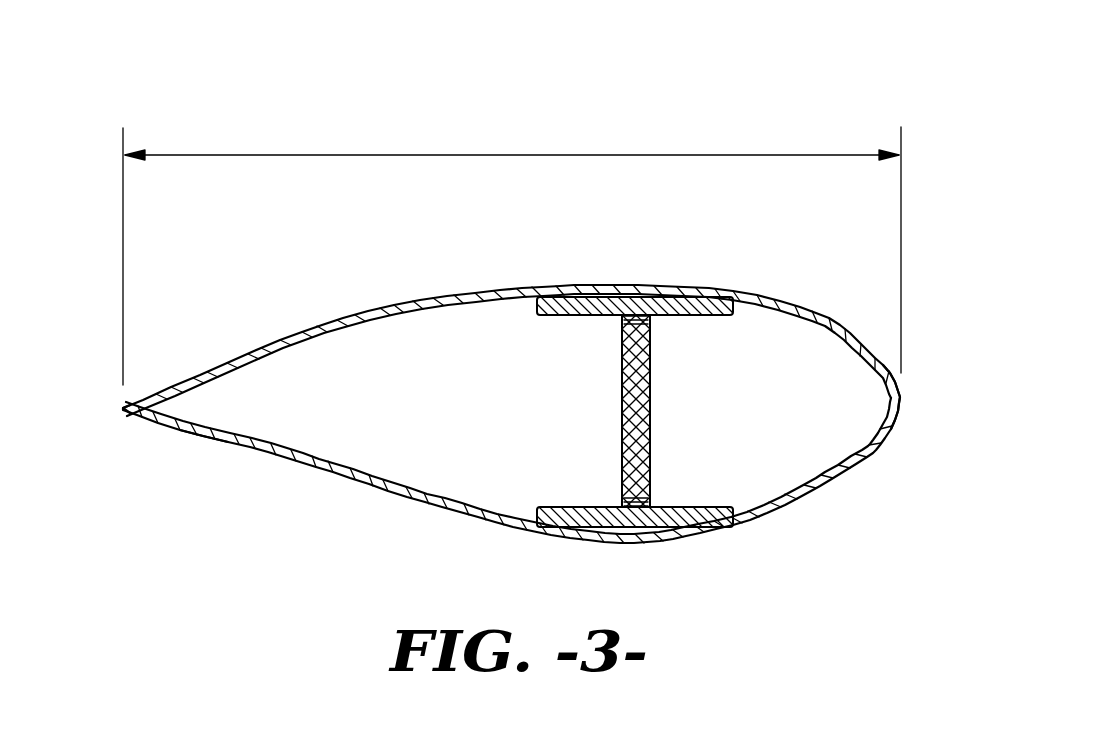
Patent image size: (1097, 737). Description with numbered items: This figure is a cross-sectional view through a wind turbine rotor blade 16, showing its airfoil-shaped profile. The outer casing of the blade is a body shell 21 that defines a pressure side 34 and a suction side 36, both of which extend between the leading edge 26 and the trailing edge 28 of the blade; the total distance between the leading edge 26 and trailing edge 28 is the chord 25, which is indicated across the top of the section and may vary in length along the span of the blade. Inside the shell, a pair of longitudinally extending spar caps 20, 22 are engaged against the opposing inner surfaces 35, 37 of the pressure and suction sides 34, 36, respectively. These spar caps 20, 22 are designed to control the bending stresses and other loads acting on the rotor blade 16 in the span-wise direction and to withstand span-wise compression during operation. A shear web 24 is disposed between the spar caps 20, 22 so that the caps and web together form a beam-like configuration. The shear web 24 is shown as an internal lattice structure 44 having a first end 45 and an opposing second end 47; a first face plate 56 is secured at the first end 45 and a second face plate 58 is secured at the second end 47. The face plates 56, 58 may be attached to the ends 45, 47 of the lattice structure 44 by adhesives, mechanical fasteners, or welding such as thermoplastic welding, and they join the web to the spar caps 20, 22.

The rotor blade 16 is at (805, 115).
The spar cap 20 is at (680, 303).
The body shell 21 is at (210, 437).
The spar cap 22 is at (705, 527).
The shear web 24 is at (652, 440).
The chord 25 is at (380, 155).
The leading edge 26 is at (903, 398).
The trailing edge 28 is at (122, 407).
The pressure side 34 is at (407, 497).
The inner surface 35 is at (308, 452).
The suction side 36 is at (414, 305).
The inner surface 37 is at (377, 325).
The internal lattice structure 44 is at (620, 410).
The first end 45 is at (620, 350).
The second end 47 is at (620, 477).
The first face plate 56 is at (653, 318).
The second face plate 58 is at (653, 500).